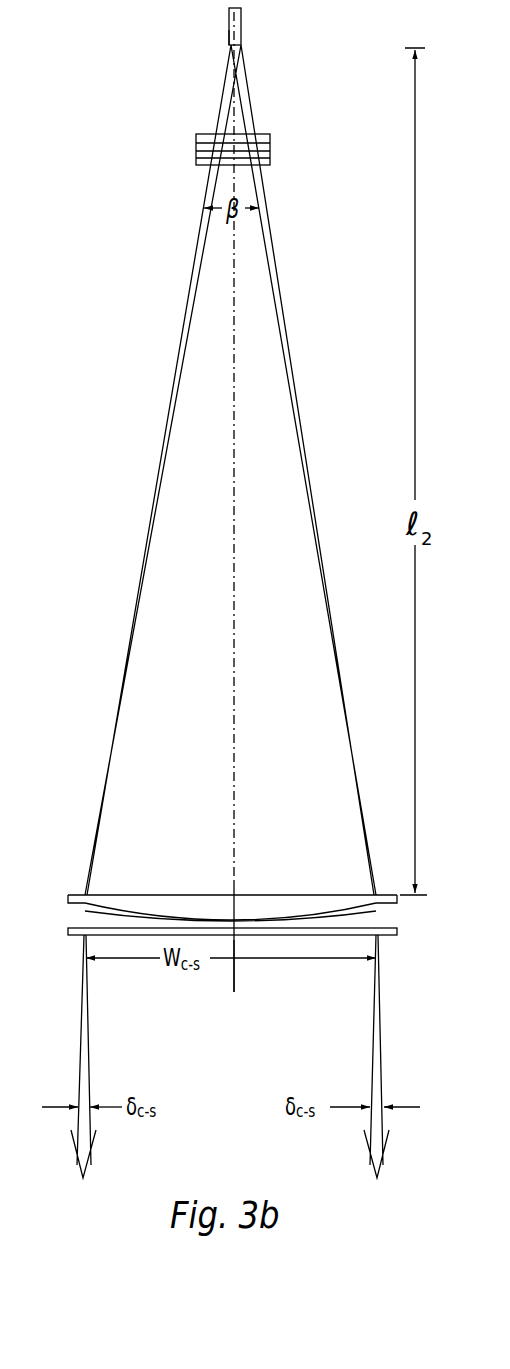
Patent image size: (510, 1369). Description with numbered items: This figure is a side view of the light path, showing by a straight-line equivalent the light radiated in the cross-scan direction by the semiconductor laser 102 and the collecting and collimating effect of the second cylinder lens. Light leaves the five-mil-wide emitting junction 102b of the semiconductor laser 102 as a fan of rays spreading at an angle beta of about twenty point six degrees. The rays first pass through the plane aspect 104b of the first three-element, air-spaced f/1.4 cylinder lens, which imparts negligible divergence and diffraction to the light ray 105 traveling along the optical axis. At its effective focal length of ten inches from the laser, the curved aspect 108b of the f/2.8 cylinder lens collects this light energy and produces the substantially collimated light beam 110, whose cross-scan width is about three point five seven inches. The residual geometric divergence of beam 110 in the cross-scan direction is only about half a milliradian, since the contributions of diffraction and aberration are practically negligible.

The semiconductor laser 102 is at (242, 30).
The emitting junction 102b is at (229, 29).
The plane aspect of lens 104b is at (198, 134).
The light ray 105 is at (234, 285).
The curved aspect of lens 108b is at (68, 895).
The collimated light beam 110 is at (234, 976).